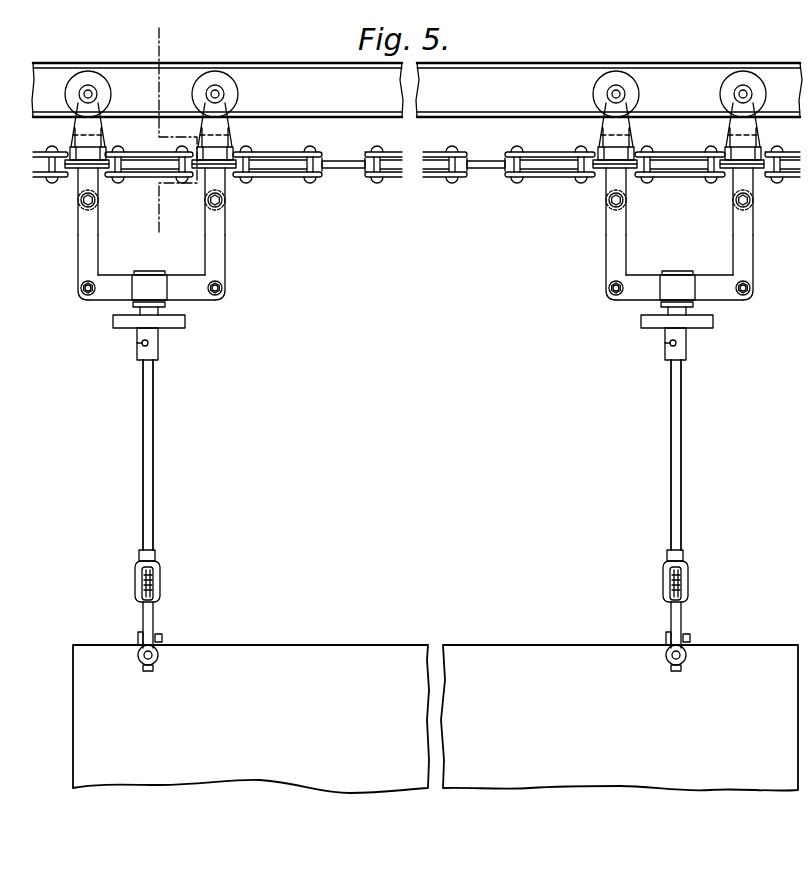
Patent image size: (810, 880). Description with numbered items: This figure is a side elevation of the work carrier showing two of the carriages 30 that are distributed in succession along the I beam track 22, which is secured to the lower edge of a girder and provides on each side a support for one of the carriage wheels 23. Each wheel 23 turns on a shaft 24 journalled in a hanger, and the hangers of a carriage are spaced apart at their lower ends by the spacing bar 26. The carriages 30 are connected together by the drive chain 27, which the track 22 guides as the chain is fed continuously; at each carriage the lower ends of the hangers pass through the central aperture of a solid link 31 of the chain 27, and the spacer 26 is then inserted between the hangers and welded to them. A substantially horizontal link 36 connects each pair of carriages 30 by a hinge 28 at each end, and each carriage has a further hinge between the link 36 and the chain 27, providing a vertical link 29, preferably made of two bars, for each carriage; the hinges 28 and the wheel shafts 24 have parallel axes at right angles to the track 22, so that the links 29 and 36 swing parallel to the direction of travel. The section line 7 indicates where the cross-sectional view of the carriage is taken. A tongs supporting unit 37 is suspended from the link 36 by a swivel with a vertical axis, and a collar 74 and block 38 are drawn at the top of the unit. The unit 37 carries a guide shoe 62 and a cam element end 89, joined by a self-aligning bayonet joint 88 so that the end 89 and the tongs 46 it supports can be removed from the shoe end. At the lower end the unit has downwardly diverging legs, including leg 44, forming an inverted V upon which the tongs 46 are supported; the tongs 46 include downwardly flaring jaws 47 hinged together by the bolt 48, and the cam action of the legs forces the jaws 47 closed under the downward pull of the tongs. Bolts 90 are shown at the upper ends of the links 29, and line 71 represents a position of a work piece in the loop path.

The section line 7- 7 is at (175, 43).
The I beam track 22 is at (335, 78).
The carriage wheel 23 is at (75, 82).
The wheel shaft 24 is at (97, 95).
The spacing bar 26 is at (93, 185).
The drive chain 27 is at (294, 181).
The hinge 28 is at (71, 290).
The vertical link 29 is at (79, 254).
The carriage 30 is at (72, 128).
The solid link 31 is at (80, 170).
The horizontal link 36 is at (183, 283).
The tongs supporting unit 37 is at (141, 437).
The center block 38 is at (151, 270).
The leg 44 is at (150, 584).
The tongs 46 is at (134, 581).
The jaw 47 is at (148, 672).
The bolt 48 is at (138, 637).
The guide shoe 62 is at (174, 324).
The work piece position line 71 is at (452, 652).
The rod collar 74 is at (139, 553).
The bayonet joint 88 is at (135, 349).
The cam element end 89 is at (154, 483).
The upper pivot bolt 90 is at (72, 202).